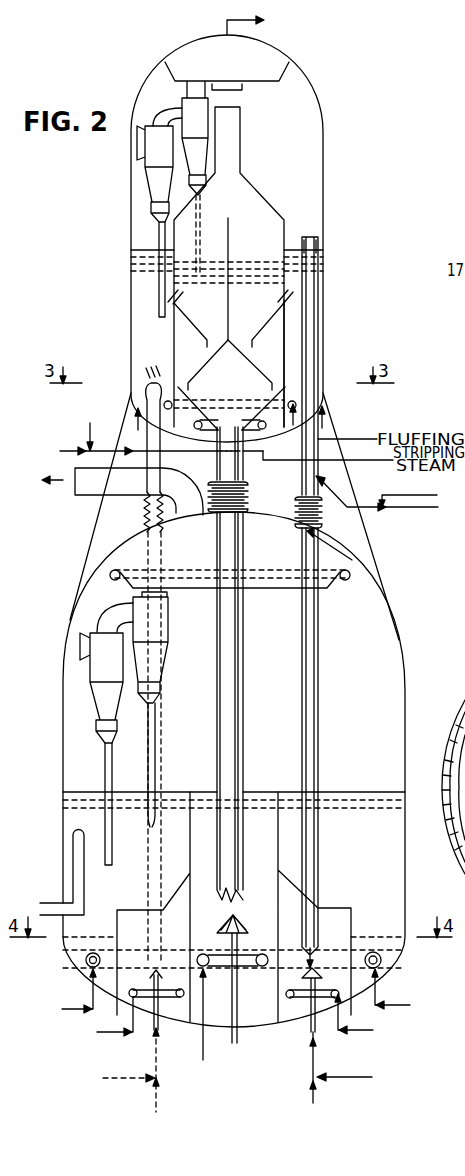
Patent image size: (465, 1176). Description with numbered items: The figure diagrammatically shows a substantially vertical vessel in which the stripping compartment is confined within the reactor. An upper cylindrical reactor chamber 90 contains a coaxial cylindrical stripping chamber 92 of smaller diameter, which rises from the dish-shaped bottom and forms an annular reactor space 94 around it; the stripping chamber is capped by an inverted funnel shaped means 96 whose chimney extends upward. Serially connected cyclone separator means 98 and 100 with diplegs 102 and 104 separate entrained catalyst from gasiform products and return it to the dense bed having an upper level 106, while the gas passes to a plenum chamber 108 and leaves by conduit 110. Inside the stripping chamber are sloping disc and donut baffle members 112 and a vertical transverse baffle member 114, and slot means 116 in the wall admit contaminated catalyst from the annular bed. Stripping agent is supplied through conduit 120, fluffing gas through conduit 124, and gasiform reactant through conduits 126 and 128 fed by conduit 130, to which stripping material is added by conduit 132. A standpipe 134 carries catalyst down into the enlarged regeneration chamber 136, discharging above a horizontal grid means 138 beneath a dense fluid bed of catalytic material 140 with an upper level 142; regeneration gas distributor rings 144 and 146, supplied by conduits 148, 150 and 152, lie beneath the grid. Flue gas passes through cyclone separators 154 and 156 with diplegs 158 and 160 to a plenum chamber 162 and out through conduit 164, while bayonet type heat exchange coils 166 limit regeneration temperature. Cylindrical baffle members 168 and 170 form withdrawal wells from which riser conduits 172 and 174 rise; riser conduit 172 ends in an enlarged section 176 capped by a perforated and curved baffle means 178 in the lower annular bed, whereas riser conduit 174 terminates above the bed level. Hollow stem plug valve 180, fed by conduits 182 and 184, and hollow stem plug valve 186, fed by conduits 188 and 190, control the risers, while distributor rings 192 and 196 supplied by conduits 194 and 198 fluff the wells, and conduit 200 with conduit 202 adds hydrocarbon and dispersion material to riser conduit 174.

The reactor chamber 90 is at (130, 206).
The stripping chamber 92 is at (285, 226).
The annular reactor space 94 is at (163, 339).
The inverted funnel shaped means 96 is at (258, 201).
The cyclone separator means 98 is at (168, 154).
The cyclone separator means 100 is at (190, 105).
The dipleg 102 is at (159, 280).
The dipleg 104 is at (200, 221).
The upper level 106 is at (142, 250).
The plenum chamber 108 is at (243, 60).
The conduit 110 is at (231, 22).
The baffle members 112 is at (215, 347).
The vertical transverse baffle member 114 is at (229, 236).
The slot means 116 is at (282, 305).
The conduit 120 is at (370, 461).
The conduit 124 is at (356, 438).
The conduit 126 is at (130, 426).
The conduit 128 is at (324, 421).
The conduit 130 is at (68, 451).
The conduit 132 is at (90, 423).
The standpipe 134 is at (243, 640).
The regeneration chamber 136 is at (62, 727).
The grid means 138 is at (373, 936).
The dense fluid bed of catalytic material 140 is at (375, 824).
The upper level 142 is at (348, 790).
The regeneration gas distributor ring 144 is at (216, 957).
The regeneration gas distributor ring 146 is at (382, 960).
The conduit 148 is at (90, 988).
The conduit 150 is at (202, 1042).
The conduit 152 is at (377, 987).
The cyclone separator 154 is at (122, 667).
The cyclone separator 156 is at (168, 613).
The dipleg 158 is at (105, 760).
The dipleg 160 is at (156, 725).
The plenum chamber 162 is at (281, 556).
The conduit 164 is at (62, 480).
The bayonet type heat exchange coils 166 is at (73, 837).
The cylindrical baffle member 168 is at (117, 912).
The cylindrical baffle member 170 is at (353, 908).
The riser conduit 172 is at (147, 858).
The riser conduit 174 is at (318, 868).
The enlarged section 176 is at (142, 392).
The perforated and curved baffle means 178 is at (151, 364).
The hollow stem plug valve 180 is at (155, 1025).
The conduit 182 is at (140, 1078).
The conduit 184 is at (159, 1095).
The hollow stem plug valve 186 is at (316, 1025).
The conduit 188 is at (335, 1078).
The conduit 190 is at (311, 1095).
The distributor ring 192 is at (179, 1000).
The conduit 194 is at (131, 1020).
The distributor ring 196 is at (298, 1000).
The conduit 198 is at (340, 1015).
The conduit 200 is at (415, 508).
The conduit 202 is at (417, 495).